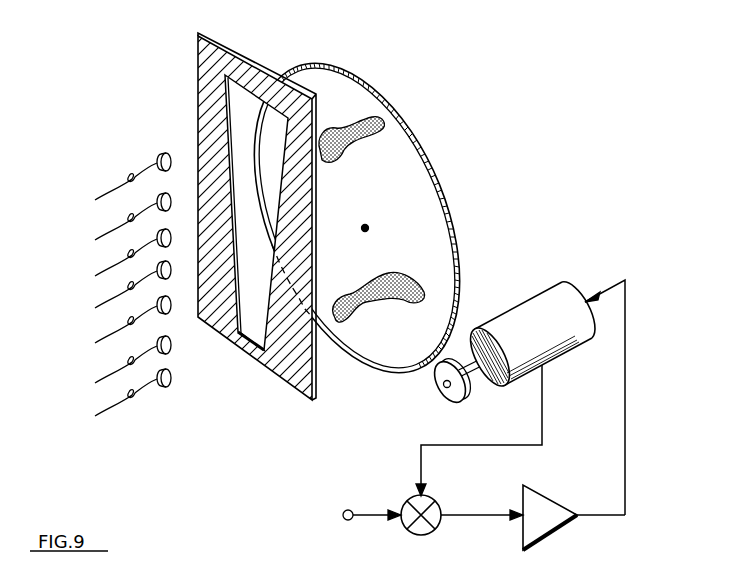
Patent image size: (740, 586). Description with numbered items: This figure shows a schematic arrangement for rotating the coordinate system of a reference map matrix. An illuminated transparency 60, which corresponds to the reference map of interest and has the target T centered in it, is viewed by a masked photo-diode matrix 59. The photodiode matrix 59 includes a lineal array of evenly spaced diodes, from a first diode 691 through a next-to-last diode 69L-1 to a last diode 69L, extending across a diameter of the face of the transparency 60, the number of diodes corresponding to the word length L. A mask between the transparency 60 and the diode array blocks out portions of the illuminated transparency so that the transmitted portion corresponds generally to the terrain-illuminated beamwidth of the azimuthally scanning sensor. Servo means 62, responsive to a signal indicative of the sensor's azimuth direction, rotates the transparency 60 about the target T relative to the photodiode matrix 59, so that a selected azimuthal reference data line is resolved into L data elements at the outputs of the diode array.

The masked photo-diode matrix 59 is at (100, 135).
The illuminated transparency 60 is at (407, 132).
The servo means 62 is at (605, 453).
The diode 69L is at (160, 157).
The diode 69L-1 is at (160, 201).
The diode 691 is at (165, 387).
The target T is at (366, 226).